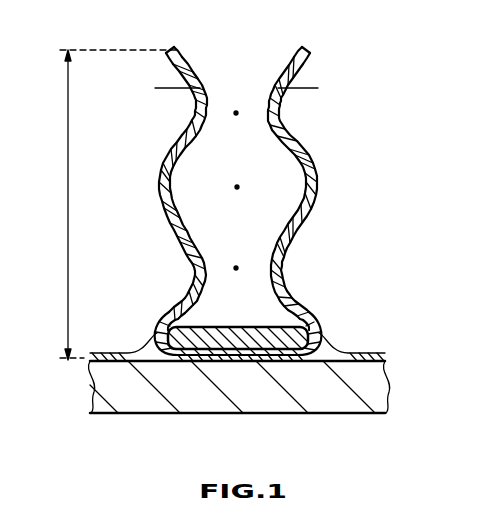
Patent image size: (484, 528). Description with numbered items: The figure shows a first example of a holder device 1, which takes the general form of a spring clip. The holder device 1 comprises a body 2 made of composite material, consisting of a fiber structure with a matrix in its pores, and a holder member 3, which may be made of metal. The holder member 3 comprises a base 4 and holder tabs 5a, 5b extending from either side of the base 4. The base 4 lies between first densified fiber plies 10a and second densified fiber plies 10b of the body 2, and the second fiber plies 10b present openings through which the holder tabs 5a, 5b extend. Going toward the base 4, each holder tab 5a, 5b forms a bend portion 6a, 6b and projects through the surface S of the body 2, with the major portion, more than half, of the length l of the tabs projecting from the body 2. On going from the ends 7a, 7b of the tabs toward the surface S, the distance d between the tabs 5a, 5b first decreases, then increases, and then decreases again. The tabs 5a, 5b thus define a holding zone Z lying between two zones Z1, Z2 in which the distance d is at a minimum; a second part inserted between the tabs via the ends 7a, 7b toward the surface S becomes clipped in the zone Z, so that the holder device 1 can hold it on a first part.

The holder device 1 is at (370, 103).
The body 2 is at (70, 375).
The holder member 3 is at (318, 56).
The base 4 is at (238, 350).
The holder tab 5a is at (190, 73).
The holder tab 5b is at (296, 70).
The bend portion 6a is at (158, 356).
The bend portion 6b is at (312, 357).
The end 7a is at (166, 50).
The end 7b is at (306, 49).
The first densified fiber plies 10a is at (372, 388).
The second densified fiber plies 10b is at (376, 355).
The surface S is at (288, 313).
The holding zone Z is at (237, 187).
The zone Z1 is at (236, 113).
The zone Z2 is at (236, 267).
The distance between the tabs d is at (165, 115).
The length of the holder tabs l is at (116, 205).